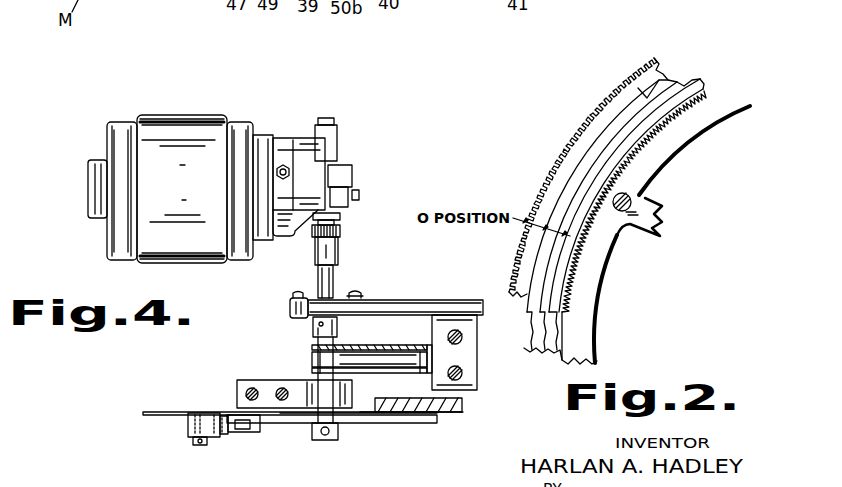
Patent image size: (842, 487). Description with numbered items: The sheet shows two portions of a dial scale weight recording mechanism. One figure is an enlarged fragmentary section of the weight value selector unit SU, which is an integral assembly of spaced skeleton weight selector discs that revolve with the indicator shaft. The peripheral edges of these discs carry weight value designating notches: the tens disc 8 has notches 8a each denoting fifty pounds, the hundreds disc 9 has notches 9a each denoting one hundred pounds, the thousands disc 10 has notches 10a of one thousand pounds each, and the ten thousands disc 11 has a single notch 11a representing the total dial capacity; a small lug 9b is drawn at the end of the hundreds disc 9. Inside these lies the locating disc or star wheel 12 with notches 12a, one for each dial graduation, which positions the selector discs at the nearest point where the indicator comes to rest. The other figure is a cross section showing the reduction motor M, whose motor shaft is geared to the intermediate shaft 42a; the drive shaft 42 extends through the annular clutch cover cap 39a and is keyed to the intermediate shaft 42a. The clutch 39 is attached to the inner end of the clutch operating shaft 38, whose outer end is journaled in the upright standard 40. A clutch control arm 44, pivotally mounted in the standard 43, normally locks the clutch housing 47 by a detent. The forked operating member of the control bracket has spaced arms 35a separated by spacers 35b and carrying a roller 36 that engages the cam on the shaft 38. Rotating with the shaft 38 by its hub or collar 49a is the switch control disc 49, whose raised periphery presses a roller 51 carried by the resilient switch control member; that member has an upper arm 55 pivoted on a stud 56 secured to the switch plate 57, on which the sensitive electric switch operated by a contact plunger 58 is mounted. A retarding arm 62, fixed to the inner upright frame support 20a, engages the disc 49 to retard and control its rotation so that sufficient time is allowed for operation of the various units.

In FIG. 4, the reduction motor M is at (177, 115).
In FIG. 4, the drive shaft 42 is at (334, 275).
In FIG. 4, the intermediate shaft 42a is at (336, 291).
In FIG. 4, the clutch control arm 44 is at (396, 304).
In FIG. 4, the clutch housing 47 is at (289, 308).
In FIG. 4, the clutch 39 is at (365, 297).
In FIG. 4, the clutch cover cap 39a is at (297, 296).
In FIG. 4, the clutch operating shaft 38 is at (332, 345).
In FIG. 4, the spaced arms 35a is at (390, 367).
In FIG. 4, the spacers 35b is at (346, 353).
In FIG. 4, the standard 43 is at (465, 353).
In FIG. 4, the roller 36 is at (424, 360).
In FIG. 4, the upright standard 40 is at (312, 386).
In FIG. 4, the switch plate 57 is at (157, 418).
In FIG. 4, the inner upright frame support 20a is at (452, 415).
In FIG. 4, the switch control disc 49 is at (287, 424).
In FIG. 4, the retarding arm 62 is at (360, 412).
In FIG. 4, the contact plunger 58 is at (225, 431).
In FIG. 4, the upper arm 55 is at (227, 413).
In FIG. 4, the stud 56 is at (199, 446).
In FIG. 4, the roller 51 is at (263, 429).
In FIG. 4, the hub / collar 49a is at (342, 440).
In FIG. 2, the tens disc 8 is at (588, 138).
In FIG. 2, the notches 8a is at (622, 88).
In FIG. 2, the hundreds disc 9 is at (590, 153).
In FIG. 2, the notches 9a is at (603, 133).
In FIG. 2, the lug of segment 9 9b is at (644, 82).
In FIG. 2, the thousands disc 10 is at (573, 203).
In FIG. 2, the notches 10a is at (652, 97).
In FIG. 2, the ten thousands disc 11 is at (558, 257).
In FIG. 2, the notch 11a is at (554, 313).
In FIG. 2, the locating disc or star wheel 12 is at (643, 180).
In FIG. 2, the notches 12a is at (647, 140).
In FIG. 2, the weight value selector unit SU is at (614, 258).